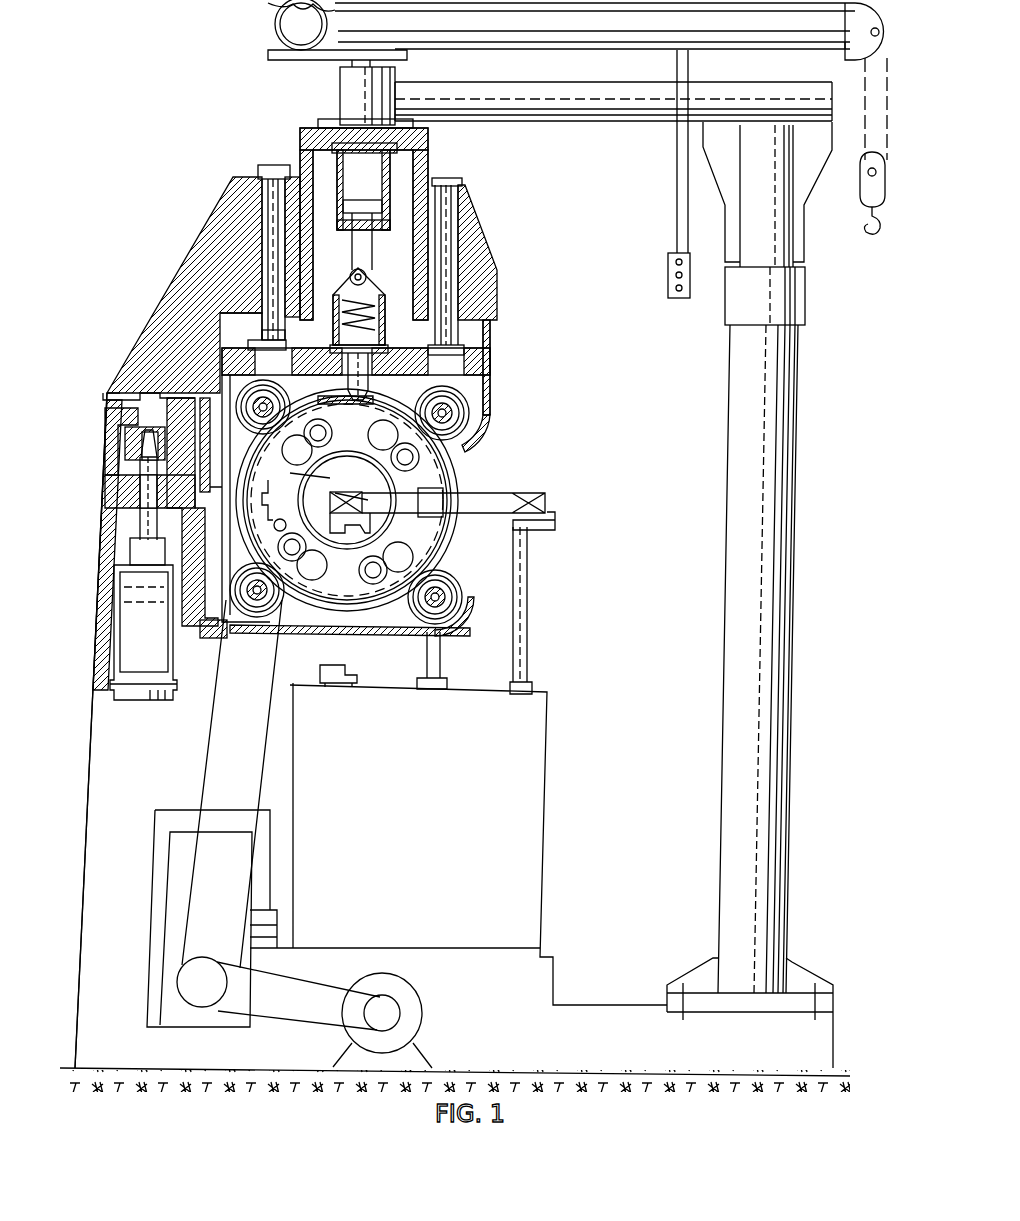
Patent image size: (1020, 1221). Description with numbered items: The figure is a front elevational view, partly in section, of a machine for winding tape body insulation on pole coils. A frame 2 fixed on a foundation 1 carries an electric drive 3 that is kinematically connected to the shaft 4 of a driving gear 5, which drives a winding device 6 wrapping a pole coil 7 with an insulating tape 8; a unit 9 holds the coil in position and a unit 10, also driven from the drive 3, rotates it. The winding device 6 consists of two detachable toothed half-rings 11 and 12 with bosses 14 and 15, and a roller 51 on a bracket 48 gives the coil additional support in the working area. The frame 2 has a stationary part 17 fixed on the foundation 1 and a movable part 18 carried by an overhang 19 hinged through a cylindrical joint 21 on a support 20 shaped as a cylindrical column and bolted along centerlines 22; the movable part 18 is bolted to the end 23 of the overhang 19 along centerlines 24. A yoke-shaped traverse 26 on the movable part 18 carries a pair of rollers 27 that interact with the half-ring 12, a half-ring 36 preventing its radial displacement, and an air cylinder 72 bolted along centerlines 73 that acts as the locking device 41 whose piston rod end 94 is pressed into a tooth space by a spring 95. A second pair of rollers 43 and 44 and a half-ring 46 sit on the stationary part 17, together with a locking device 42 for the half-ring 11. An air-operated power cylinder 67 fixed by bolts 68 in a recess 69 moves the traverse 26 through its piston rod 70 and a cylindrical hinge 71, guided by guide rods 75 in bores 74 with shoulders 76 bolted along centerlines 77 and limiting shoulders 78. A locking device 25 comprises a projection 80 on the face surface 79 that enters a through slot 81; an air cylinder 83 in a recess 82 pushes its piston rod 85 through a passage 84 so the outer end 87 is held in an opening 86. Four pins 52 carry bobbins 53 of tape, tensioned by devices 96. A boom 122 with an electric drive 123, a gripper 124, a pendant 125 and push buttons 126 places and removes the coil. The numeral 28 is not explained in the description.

The foundation 1 is at (138, 1086).
The frame 2 is at (73, 856).
The electric drive 3 is at (308, 965).
The shaft 4 is at (243, 612).
The driving gear 5 is at (272, 600).
The winding device 6 is at (452, 452).
The pole coil 7 is at (505, 495).
The insulating tape 8 is at (346, 488).
The unit for holding the pole coil 9 is at (556, 515).
The unit for rotation of the coil 10 is at (543, 897).
The toothed half-ring 11 is at (318, 592).
The toothed half-ring 12 is at (280, 402).
The bosses 14 is at (235, 505).
The bosses 15 is at (262, 482).
The stationary part of the frame 17 is at (100, 738).
The movable part of the frame 18 is at (172, 292).
The overhang 19 is at (613, 174).
The support 20 is at (735, 460).
The cylindrical joint 21 is at (735, 312).
The bolt centerlines 22 is at (685, 975).
The end of the overhang 23 is at (340, 80).
The centerlines 24 is at (318, 122).
The locking device 25 is at (135, 500).
The yoke-shaped traverse 26 is at (490, 360).
The rollers 27 is at (460, 414).
The housing 28 is at (482, 385).
The half-ring 36 is at (310, 470).
The device for locking the half-ring 12 41 is at (372, 392).
The device for locking the half-ring 11 42 is at (272, 535).
The roller 43 is at (262, 612).
The roller 44 is at (450, 625).
The half-ring 46 is at (357, 545).
The bracket 48 is at (442, 540).
The roller 51 is at (342, 533).
The pins 52 is at (380, 585).
The bobbins 53 is at (424, 585).
The air-operated power cylinder 67 is at (340, 185).
The bolts 68 is at (392, 160).
The recess 69 is at (306, 145).
The piston rod 70 is at (372, 245).
The cylindrical hinge 71 is at (367, 277).
The air-operated cylinder 72 is at (382, 300).
The centerlines 73 is at (388, 347).
The bores 74 is at (285, 240).
The guide rods 75 is at (268, 210).
The shoulder 76 is at (250, 343).
The centerlines 77 is at (272, 342).
The shoulder 78 is at (260, 168).
The face surface 79 is at (106, 392).
The projection 80 is at (105, 410).
The through slot 81 is at (110, 490).
The recess 82 is at (130, 550).
The air-operated cylinder 83 is at (125, 635).
The passage 84 is at (135, 520).
The piston rod 85 is at (120, 580).
The opening 86 is at (125, 435).
The outer end of the piston rod 87 is at (141, 450).
The piston rod end 94 is at (348, 380).
The spring 95 is at (335, 300).
The tensioning device 96 is at (392, 420).
The boom 122 is at (468, 38).
The electric drive 123 is at (276, 12).
The gripper 124 is at (868, 236).
The pendant 125 is at (676, 220).
The push buttons 126 is at (668, 284).